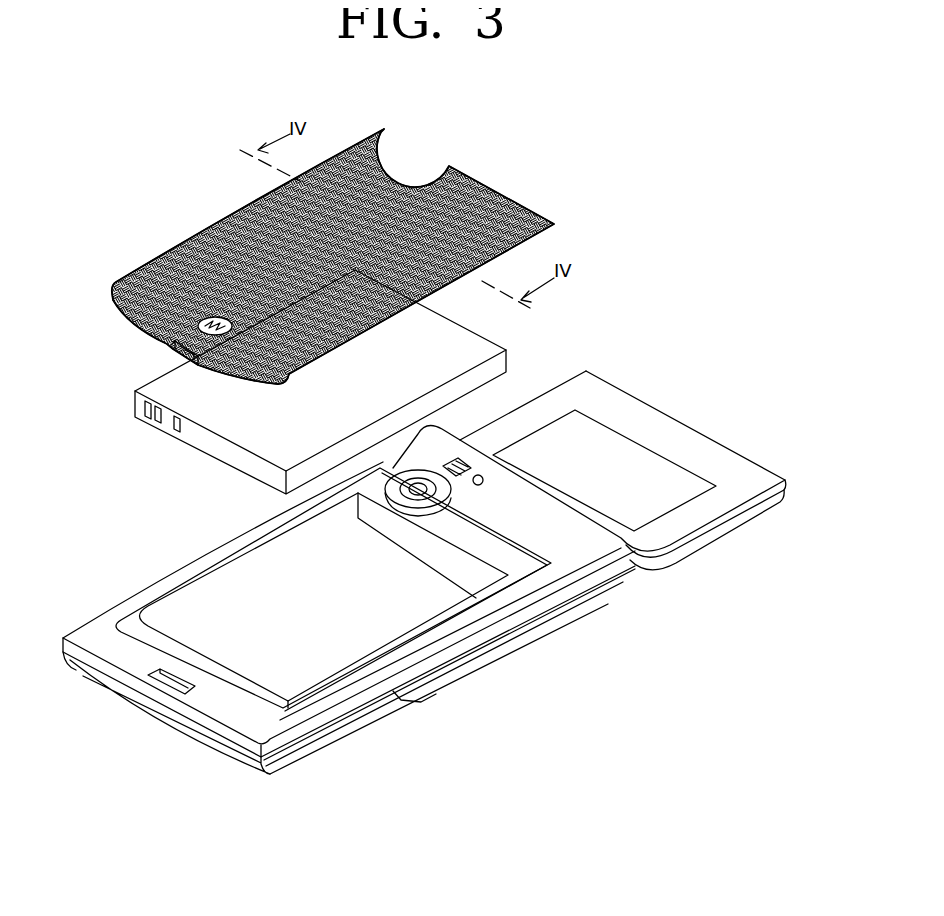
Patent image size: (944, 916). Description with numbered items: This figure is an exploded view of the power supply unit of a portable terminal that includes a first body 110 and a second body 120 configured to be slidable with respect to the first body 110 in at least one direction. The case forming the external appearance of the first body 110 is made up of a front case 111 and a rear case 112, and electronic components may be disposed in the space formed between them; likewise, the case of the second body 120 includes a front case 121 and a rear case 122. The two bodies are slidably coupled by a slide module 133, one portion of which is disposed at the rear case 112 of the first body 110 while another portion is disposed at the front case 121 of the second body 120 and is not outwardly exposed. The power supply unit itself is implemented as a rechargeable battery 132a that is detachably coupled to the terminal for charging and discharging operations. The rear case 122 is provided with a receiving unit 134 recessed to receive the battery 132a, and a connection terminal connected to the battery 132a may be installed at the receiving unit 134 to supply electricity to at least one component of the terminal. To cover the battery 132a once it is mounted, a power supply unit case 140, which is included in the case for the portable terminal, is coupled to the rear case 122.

The first body 110 is at (608, 429).
The front case 111 is at (712, 520).
The rear case 112 is at (722, 503).
The second body 120 is at (334, 632).
The front case 121 is at (290, 737).
The rear case 122 is at (305, 710).
The rechargeable battery 132a is at (165, 378).
The slide module 133 is at (643, 468).
The receiving unit 134 is at (240, 590).
The power supply unit case 140 is at (190, 220).